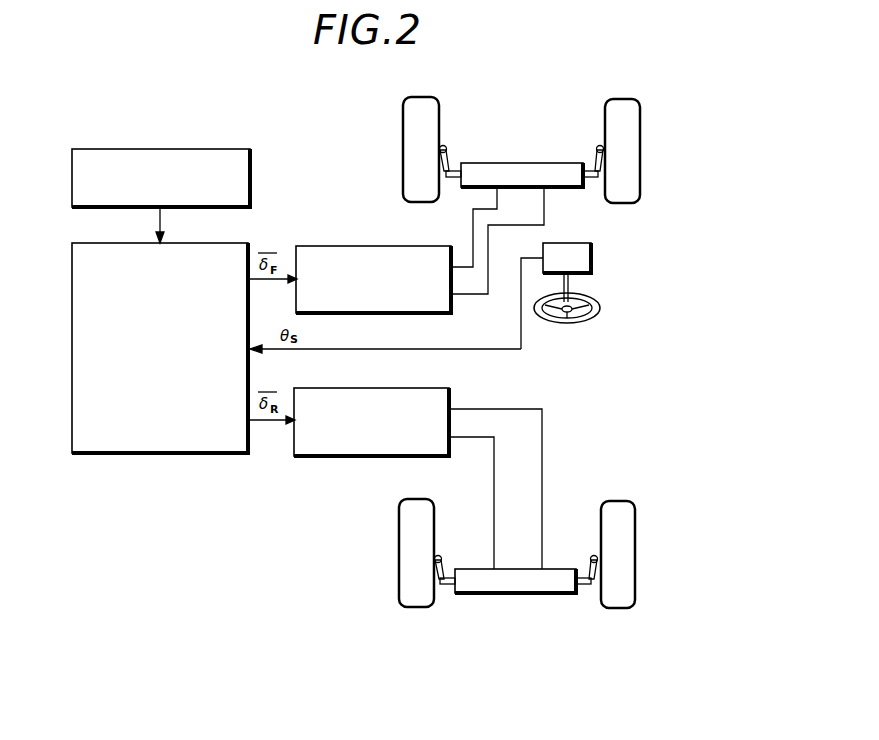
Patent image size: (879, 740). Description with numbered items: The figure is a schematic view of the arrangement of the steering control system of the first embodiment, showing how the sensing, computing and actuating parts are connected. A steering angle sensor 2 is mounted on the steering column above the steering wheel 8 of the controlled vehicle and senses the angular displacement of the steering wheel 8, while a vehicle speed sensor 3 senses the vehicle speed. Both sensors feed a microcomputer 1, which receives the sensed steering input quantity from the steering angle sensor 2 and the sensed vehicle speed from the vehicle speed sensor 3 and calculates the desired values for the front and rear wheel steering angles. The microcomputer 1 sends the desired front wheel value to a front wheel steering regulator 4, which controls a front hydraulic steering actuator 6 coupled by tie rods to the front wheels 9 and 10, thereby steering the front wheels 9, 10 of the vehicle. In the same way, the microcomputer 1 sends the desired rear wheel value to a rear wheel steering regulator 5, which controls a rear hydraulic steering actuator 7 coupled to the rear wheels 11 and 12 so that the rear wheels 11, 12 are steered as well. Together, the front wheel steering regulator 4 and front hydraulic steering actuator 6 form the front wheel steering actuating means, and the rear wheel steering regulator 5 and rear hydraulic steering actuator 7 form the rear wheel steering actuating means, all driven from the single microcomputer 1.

The microcomputer 1 is at (215, 455).
The steering angle sensor 2 is at (592, 259).
The vehicle speed sensor 3 is at (220, 148).
The front wheel steering regulator 4 is at (318, 245).
The rear wheel steering regulator 5 is at (305, 458).
The front hydraulic steering actuator 6 is at (552, 162).
The rear hydraulic steering actuator 7 is at (545, 595).
The steering wheel 8 is at (596, 318).
The front wheel 9 is at (640, 113).
The front wheel 10 is at (403, 107).
The rear wheel 11 is at (635, 516).
The rear wheel 12 is at (399, 509).